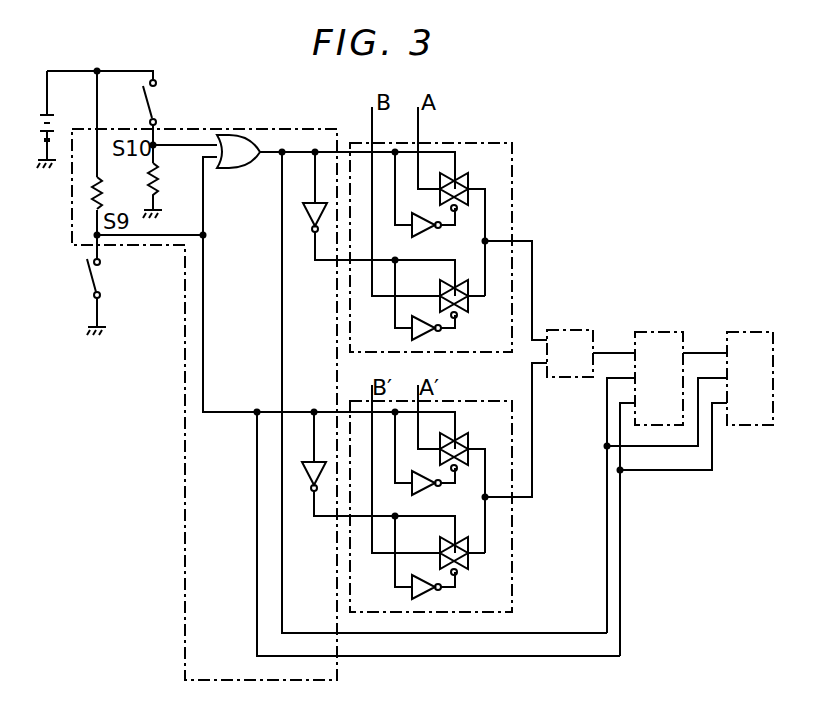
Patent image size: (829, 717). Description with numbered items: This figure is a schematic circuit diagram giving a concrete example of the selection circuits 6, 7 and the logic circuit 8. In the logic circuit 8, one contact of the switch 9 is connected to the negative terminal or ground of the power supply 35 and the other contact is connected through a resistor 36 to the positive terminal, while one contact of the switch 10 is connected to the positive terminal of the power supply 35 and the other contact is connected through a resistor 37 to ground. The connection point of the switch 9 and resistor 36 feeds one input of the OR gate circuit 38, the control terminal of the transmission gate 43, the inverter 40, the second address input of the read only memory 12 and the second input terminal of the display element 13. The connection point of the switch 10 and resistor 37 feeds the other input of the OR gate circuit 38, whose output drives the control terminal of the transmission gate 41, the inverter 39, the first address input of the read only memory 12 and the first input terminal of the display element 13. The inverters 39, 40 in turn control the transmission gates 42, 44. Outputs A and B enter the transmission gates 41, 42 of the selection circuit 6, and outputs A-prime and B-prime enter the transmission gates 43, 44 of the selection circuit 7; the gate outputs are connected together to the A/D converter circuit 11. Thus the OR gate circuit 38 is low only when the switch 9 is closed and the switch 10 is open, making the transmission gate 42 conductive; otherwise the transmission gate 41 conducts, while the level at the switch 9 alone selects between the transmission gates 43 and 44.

The selection circuit 6 is at (499, 143).
The selection circuit 7 is at (487, 401).
The logic circuit 8 is at (281, 128).
The switch 9 is at (99, 276).
The switch 10 is at (158, 107).
The A/D converter circuit 11 is at (570, 353).
The read only memory 12 is at (659, 378).
The display element 13 is at (750, 378).
The power supply 35 is at (65, 119).
The resistor 36 is at (113, 193).
The resistor 37 is at (166, 190).
The OR gate circuit 38 is at (238, 166).
The inverter 39 is at (307, 205).
The inverter 40 is at (305, 461).
The transmission gate 41 is at (440, 205).
The transmission gate 42 is at (440, 310).
The transmission gate 43 is at (439, 464).
The transmission gate 44 is at (440, 568).